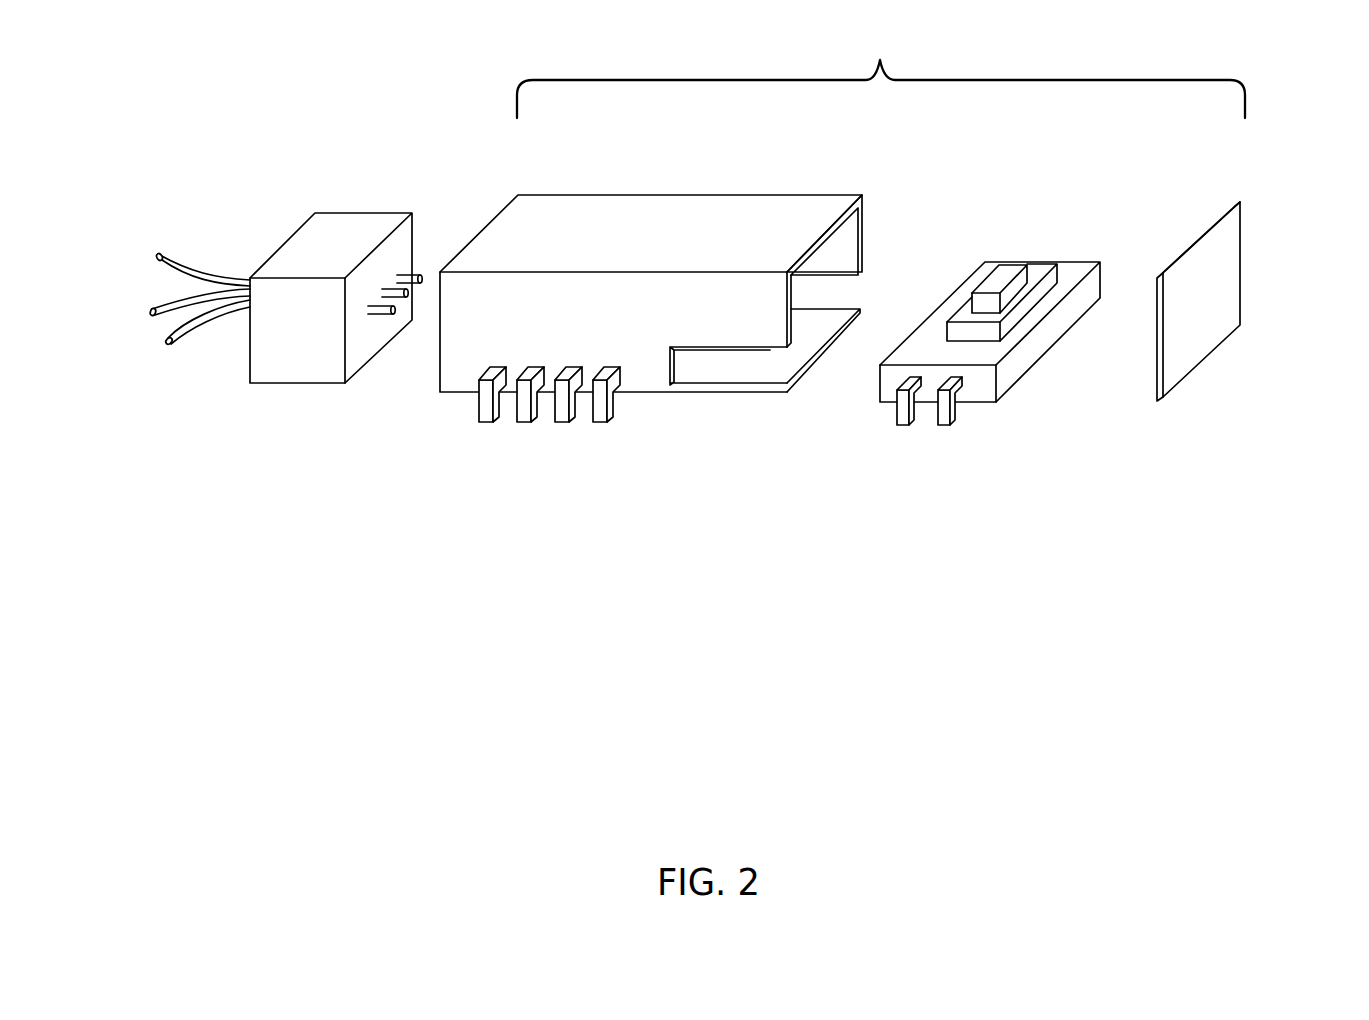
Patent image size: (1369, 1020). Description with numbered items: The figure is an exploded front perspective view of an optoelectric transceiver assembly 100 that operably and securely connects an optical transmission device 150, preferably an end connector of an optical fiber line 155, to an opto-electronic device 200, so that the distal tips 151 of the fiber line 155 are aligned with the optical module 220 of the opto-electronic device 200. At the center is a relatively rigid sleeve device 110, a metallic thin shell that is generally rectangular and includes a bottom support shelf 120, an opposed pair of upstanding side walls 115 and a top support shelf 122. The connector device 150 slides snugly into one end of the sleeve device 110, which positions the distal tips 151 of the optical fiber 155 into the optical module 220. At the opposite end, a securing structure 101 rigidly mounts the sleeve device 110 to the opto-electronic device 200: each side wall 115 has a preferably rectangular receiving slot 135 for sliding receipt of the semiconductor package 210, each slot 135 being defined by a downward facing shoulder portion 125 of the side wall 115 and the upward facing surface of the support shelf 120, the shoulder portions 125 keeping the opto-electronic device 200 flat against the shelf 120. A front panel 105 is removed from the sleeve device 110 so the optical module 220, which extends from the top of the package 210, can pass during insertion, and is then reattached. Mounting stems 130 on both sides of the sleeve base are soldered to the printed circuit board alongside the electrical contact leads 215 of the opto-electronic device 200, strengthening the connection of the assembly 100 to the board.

The optoelectric transceiver assembly 100 is at (881, 74).
The securing structure 101 is at (722, 489).
The front panel 105 is at (1240, 247).
The sleeve device 110 is at (688, 194).
The side walls 115 is at (862, 217).
The bottom support shelf 120 is at (837, 340).
The top support shelf 122 is at (657, 223).
The shoulder portion 125 is at (762, 347).
The mounting stems 130 is at (530, 425).
The receiving slot 135 is at (858, 292).
The optical transmission device 150 is at (363, 212).
The distal tips 151 is at (388, 317).
The optical fiber line 155 is at (187, 262).
The opto-electronic device 200 is at (1012, 428).
The semiconductor package 210 is at (1055, 347).
The electrical contact leads 215 is at (948, 425).
The optical module 220 is at (1062, 282).